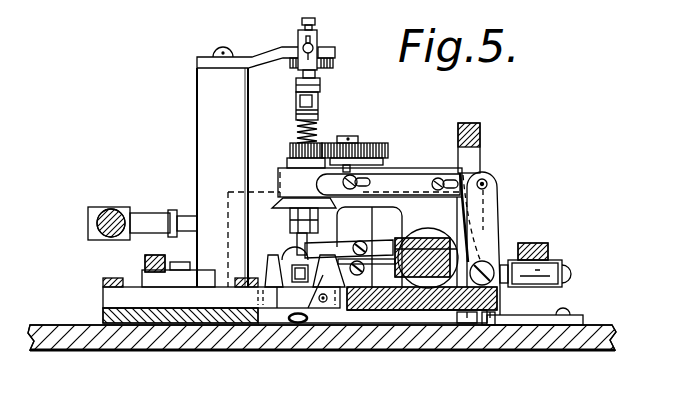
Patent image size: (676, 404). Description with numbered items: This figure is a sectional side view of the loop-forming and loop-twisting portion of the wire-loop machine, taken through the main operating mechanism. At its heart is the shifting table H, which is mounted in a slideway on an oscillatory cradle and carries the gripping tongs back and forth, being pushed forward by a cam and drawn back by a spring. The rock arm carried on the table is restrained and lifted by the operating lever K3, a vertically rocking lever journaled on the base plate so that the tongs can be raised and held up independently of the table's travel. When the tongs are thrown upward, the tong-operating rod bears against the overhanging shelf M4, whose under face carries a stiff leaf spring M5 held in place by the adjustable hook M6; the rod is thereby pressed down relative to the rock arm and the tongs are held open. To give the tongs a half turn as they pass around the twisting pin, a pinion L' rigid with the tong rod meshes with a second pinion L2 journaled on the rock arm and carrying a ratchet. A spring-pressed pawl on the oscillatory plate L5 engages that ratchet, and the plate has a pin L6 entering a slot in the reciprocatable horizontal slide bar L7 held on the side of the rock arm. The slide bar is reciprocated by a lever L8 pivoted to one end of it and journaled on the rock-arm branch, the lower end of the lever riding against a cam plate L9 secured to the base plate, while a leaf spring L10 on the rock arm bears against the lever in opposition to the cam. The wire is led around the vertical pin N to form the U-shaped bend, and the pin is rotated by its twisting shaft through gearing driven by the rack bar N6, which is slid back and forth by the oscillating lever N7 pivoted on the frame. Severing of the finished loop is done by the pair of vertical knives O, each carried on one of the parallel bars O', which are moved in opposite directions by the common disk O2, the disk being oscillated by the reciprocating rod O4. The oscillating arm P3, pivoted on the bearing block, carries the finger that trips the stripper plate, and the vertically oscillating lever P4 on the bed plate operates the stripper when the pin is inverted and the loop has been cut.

The adjustable hook M6 is at (302, 40).
The overhanging shelf M4 is at (288, 46).
The stiff leaf spring M5 is at (321, 63).
The pinion L' is at (291, 147).
The second pinion L2 is at (383, 144).
The oscillatory plate L5 is at (386, 165).
The reciprocatable horizontal slide bar L7 is at (417, 180).
The pin L6 is at (349, 175).
The vertically oscillating lever P4 is at (480, 157).
The leaf spring L10 is at (460, 217).
The lever L8 is at (490, 237).
The operating lever K3 is at (547, 250).
The cam plate L9 is at (502, 318).
The shifting table H is at (422, 257).
The oscillating arm P3 is at (377, 254).
The vertical peg or pin N is at (305, 263).
The knives O is at (300, 260).
The bars O' is at (198, 291).
The reciprocating rod O4 is at (145, 263).
The common disk O2 is at (172, 276).
The rack bar N6 is at (148, 217).
The oscillating lever N7 is at (97, 230).